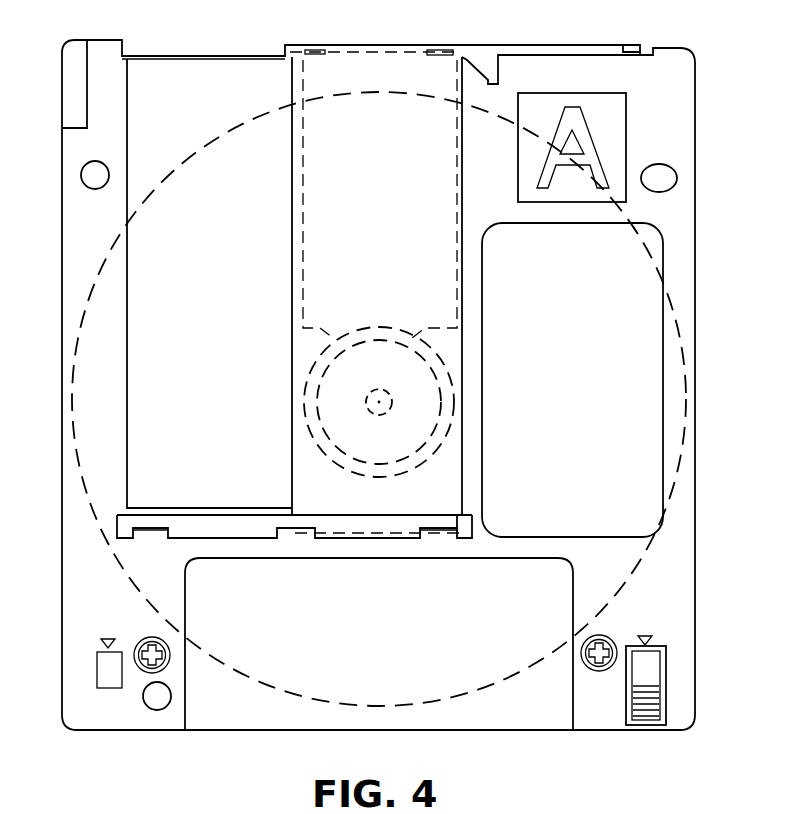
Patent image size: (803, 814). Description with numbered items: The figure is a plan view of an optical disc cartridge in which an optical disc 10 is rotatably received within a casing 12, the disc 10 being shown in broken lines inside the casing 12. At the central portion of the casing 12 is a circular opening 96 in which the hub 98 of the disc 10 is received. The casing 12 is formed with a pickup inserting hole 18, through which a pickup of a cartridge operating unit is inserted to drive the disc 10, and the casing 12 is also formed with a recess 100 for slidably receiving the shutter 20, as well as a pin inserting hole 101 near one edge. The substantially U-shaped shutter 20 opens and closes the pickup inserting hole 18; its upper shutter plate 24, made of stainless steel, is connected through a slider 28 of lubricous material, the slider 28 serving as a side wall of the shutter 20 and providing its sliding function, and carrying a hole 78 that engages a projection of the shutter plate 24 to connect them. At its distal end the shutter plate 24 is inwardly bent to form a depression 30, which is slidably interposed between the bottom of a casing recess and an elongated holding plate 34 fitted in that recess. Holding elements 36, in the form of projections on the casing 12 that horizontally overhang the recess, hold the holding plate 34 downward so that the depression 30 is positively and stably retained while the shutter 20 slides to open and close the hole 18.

The optical disc 10 is at (683, 430).
The casing 12 is at (67, 230).
The pickup inserting hole 18 is at (301, 206).
The shutter 20 is at (264, 266).
The upper shutter plate 24 is at (291, 72).
The slider 28 is at (375, 47).
The depression 30 is at (402, 536).
The holding plate 34 is at (374, 526).
The holding element 36 is at (290, 533).
The hole 78 is at (441, 50).
The circular opening 96 is at (452, 372).
The hub 98 is at (430, 418).
The recess 100 is at (128, 342).
The pin inserting hole 101 is at (92, 176).